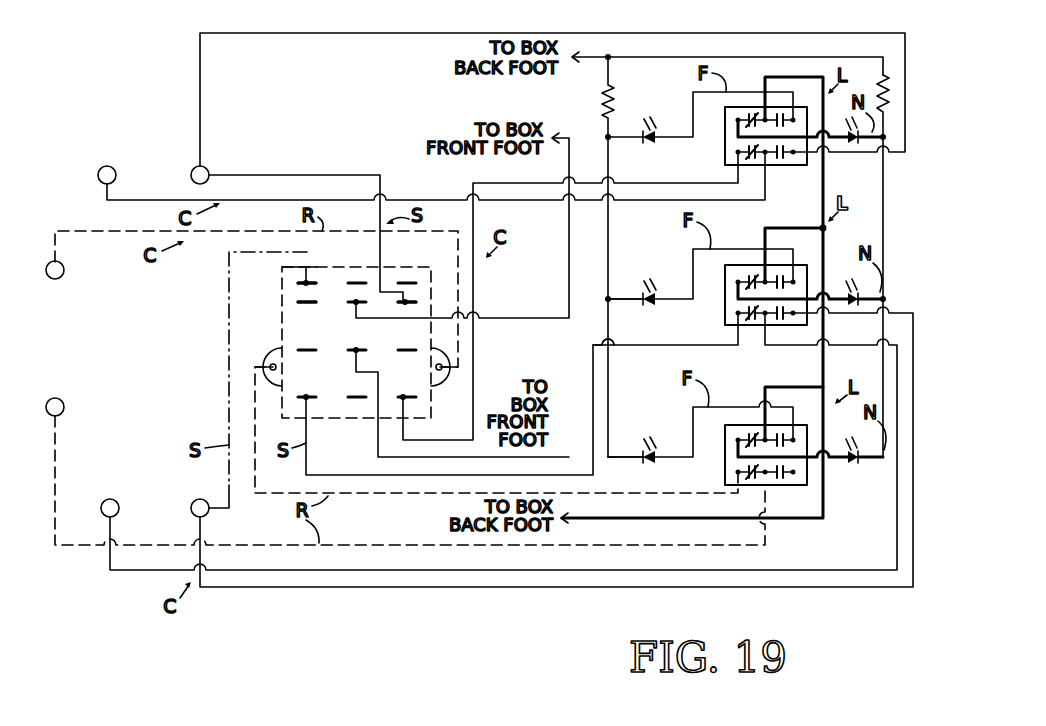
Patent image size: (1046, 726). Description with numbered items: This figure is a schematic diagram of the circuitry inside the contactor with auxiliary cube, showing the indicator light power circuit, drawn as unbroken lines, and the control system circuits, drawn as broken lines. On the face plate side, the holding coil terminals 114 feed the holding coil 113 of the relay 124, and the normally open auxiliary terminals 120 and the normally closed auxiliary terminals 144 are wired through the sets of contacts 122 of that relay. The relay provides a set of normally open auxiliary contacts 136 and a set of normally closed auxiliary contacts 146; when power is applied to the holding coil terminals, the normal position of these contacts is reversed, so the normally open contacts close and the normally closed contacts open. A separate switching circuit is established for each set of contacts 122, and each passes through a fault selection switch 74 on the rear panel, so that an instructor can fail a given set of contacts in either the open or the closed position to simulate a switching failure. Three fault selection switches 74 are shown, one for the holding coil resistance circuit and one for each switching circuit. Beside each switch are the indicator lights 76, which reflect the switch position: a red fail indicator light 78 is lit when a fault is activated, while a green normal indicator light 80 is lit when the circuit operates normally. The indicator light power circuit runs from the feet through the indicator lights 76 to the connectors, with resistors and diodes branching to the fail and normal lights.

The auxiliary terminals 120 is at (113, 167).
The holding coil terminals 114 is at (62, 277).
The normally closed auxiliary terminals 144 is at (118, 500).
The set of contacts 122 is at (328, 268).
The normally closed auxiliary contacts 146 is at (297, 293).
The relay 124 is at (312, 327).
The normally open auxiliary contacts 136 is at (435, 298).
The holding coil 113 is at (266, 363).
The fault selection switch 74 is at (723, 143).
The red fail indicator light 78 is at (645, 130).
The indicator lights 76 is at (652, 308).
The green normal indicator light 80 is at (851, 130).